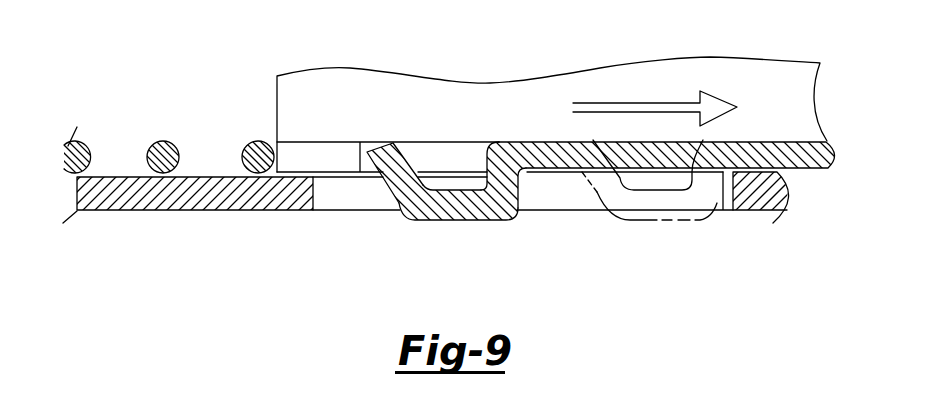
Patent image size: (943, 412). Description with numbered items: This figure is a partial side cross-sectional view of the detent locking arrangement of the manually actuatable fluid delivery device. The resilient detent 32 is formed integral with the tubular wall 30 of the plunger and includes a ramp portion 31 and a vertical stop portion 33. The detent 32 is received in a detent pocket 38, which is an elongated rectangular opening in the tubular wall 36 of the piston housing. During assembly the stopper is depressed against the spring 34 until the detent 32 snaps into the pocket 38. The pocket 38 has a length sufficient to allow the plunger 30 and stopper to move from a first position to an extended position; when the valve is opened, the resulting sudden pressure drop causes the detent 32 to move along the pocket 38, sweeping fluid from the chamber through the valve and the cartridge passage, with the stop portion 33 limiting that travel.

The tubular wall of the plunger 30 is at (805, 170).
The ramp portion 31 is at (390, 148).
The resilient detent 32 is at (427, 214).
The vertical stop portion 33 is at (518, 190).
The spring 34 is at (165, 141).
The tubular wall of the piston housing 36 is at (270, 211).
The detent pocket 38 is at (705, 200).